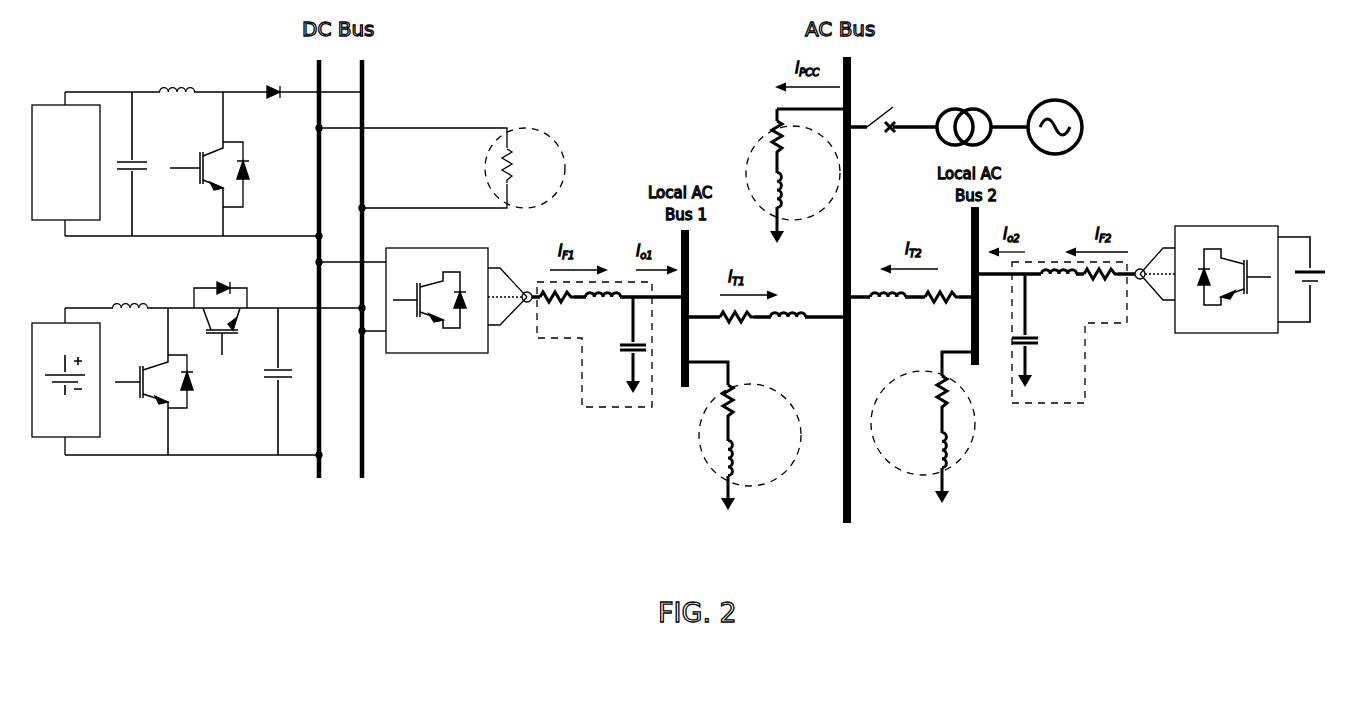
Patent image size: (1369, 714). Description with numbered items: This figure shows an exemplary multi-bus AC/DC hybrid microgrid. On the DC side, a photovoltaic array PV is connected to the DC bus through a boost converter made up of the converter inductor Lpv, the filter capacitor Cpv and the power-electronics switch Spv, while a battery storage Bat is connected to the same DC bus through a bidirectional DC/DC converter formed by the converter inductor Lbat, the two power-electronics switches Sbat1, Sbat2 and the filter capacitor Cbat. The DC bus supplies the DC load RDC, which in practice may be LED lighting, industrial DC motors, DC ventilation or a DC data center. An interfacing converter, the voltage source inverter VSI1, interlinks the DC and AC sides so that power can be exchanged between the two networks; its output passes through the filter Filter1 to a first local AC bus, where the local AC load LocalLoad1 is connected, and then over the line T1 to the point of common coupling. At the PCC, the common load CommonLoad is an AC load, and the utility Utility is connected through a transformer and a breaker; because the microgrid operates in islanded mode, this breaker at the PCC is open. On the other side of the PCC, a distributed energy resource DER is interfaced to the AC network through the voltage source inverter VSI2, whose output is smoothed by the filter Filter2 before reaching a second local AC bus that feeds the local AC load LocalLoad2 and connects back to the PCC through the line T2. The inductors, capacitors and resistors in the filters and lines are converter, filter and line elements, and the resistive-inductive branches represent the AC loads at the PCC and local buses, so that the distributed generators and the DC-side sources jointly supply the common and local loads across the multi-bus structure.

The PV array PV is at (66, 162).
The converter inductor Lpv is at (177, 77).
The filter capacitor Cpv is at (141, 164).
The power-electronics switch Spv is at (204, 164).
The battery storage Bat is at (66, 380).
The converter inductor Lbat is at (130, 297).
The power-electronics switch Sbat1 is at (151, 381).
The power-electronics switch Sbat2 is at (220, 329).
The filter capacitor Cbat is at (267, 381).
The DC load RDC is at (442, 153).
The voltage source inverter VSI1 is at (424, 312).
The filter Filter1 is at (600, 344).
The line T1 is at (768, 329).
The AC load LocalLoad1 is at (724, 436).
The common load CommonLoad is at (771, 166).
The utility Utility is at (990, 111).
The line T2 is at (911, 310).
The AC load LocalLoad2 is at (948, 427).
The filter Filter2 is at (1060, 332).
The voltage source inverter VSI2 is at (1206, 294).
The distributed energy resource DER is at (1322, 279).